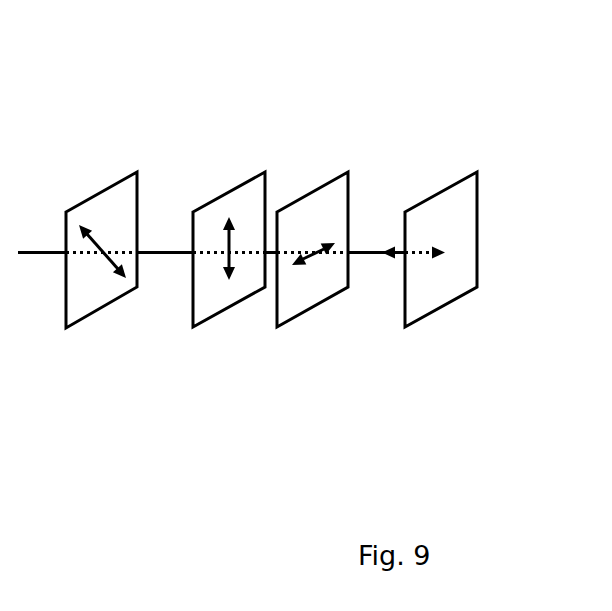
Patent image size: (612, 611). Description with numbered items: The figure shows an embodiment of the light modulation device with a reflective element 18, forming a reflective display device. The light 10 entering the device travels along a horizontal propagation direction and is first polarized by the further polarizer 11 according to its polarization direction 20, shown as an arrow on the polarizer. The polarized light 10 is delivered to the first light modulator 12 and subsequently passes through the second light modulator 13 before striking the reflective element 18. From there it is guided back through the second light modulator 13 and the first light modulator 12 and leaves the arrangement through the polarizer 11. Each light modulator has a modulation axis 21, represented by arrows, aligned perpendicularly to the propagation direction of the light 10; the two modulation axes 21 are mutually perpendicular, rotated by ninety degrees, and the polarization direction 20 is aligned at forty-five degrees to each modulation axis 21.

The light 10 is at (158, 252).
The further polarizer 11 is at (106, 189).
The first light modulator 12 is at (229, 192).
The second light modulator 13 is at (312, 192).
The reflective element 18 is at (443, 191).
The polarization direction 20 is at (121, 276).
The modulation axis 21 is at (228, 280).